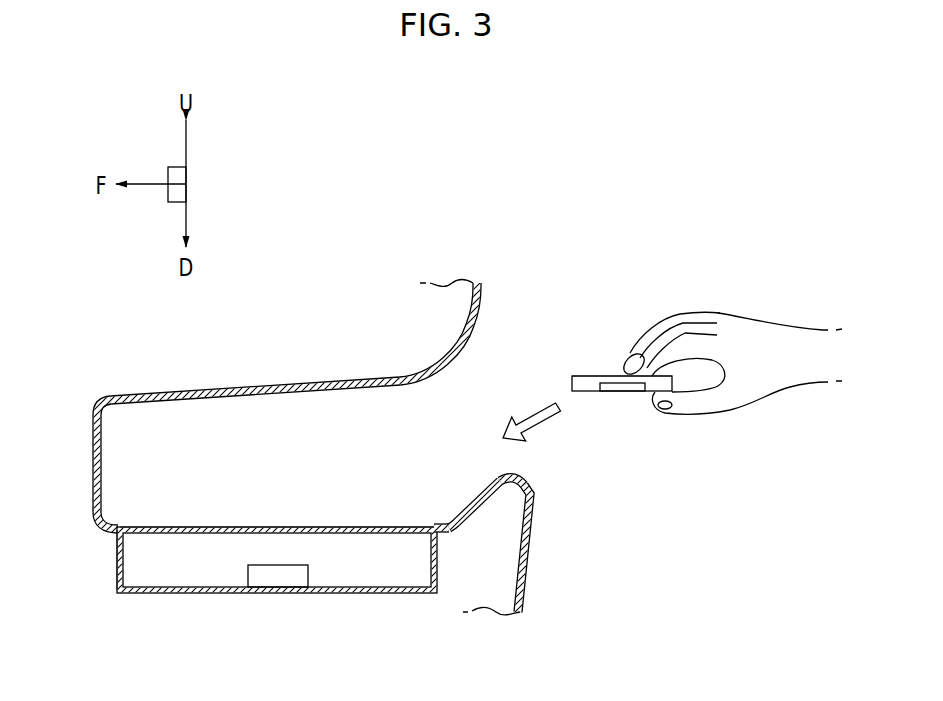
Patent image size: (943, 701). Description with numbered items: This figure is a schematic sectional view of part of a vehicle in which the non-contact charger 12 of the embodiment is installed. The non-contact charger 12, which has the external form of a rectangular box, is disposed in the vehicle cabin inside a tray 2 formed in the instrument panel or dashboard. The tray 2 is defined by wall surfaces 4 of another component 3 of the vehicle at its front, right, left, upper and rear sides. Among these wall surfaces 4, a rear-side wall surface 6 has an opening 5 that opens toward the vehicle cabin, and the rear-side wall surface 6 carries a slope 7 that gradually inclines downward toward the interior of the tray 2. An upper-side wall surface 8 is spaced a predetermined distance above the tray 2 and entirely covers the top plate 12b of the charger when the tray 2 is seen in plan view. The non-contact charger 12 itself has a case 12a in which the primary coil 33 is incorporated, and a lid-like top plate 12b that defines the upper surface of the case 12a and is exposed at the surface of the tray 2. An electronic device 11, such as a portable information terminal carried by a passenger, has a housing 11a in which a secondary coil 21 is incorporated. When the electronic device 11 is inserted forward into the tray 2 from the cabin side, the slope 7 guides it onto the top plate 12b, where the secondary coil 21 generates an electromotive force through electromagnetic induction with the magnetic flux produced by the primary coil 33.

The tray 2 is at (434, 525).
The another component 3 is at (445, 312).
The wall surfaces 4 is at (106, 444).
The opening 5 is at (512, 476).
The rear-side wall surface 6 is at (488, 476).
The slope 7 is at (477, 502).
The upper-side wall surface 8 is at (231, 394).
The electronic device 11 is at (591, 338).
The housing 11a is at (612, 386).
The non-contact charger 12 is at (183, 524).
The case 12a is at (116, 558).
The top plate 12b is at (263, 526).
The secondary coil 21 is at (603, 384).
The primary coil 33 is at (275, 572).